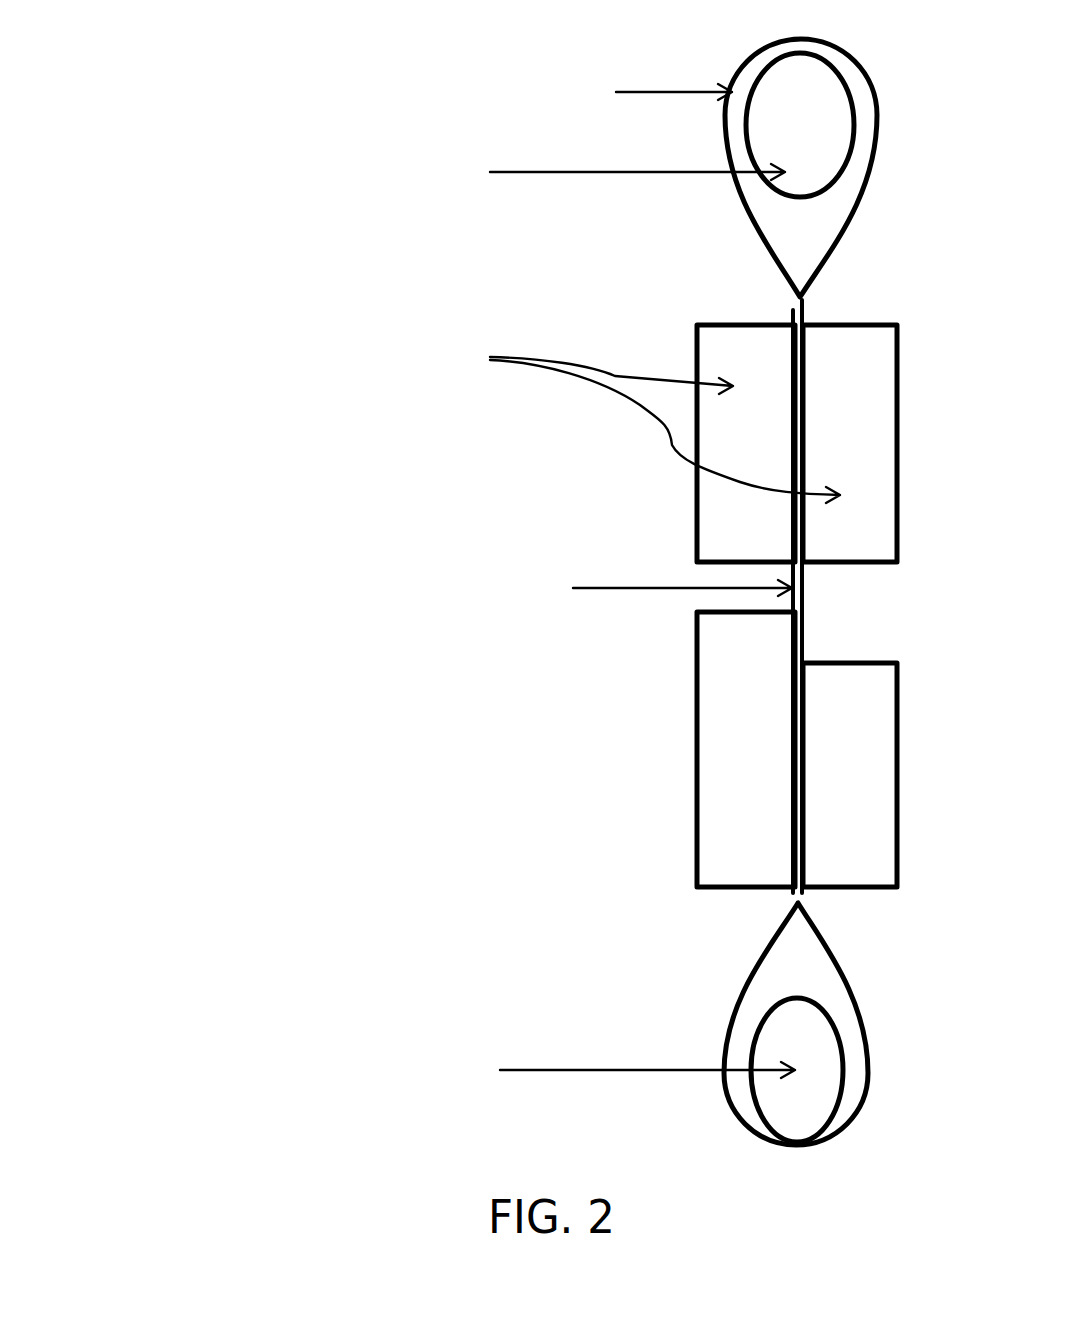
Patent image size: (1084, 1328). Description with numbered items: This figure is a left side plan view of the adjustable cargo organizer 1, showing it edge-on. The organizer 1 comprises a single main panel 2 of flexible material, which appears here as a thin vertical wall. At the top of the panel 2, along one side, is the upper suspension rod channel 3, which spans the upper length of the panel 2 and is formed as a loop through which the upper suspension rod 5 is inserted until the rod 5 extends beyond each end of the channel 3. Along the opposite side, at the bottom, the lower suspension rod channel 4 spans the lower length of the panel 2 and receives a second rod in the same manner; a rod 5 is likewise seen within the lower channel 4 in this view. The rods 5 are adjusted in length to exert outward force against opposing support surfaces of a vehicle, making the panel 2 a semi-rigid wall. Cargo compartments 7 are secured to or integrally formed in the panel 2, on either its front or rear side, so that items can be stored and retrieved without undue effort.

The adjustable cargo organizer 1 is at (128, 136).
The main panel 2 is at (808, 636).
The upper suspension rod channel 3 is at (842, 67).
The lower suspension rod channel 4 is at (772, 1147).
The upper suspension rod 5 is at (818, 128).
The cargo compartments 7 is at (745, 323).